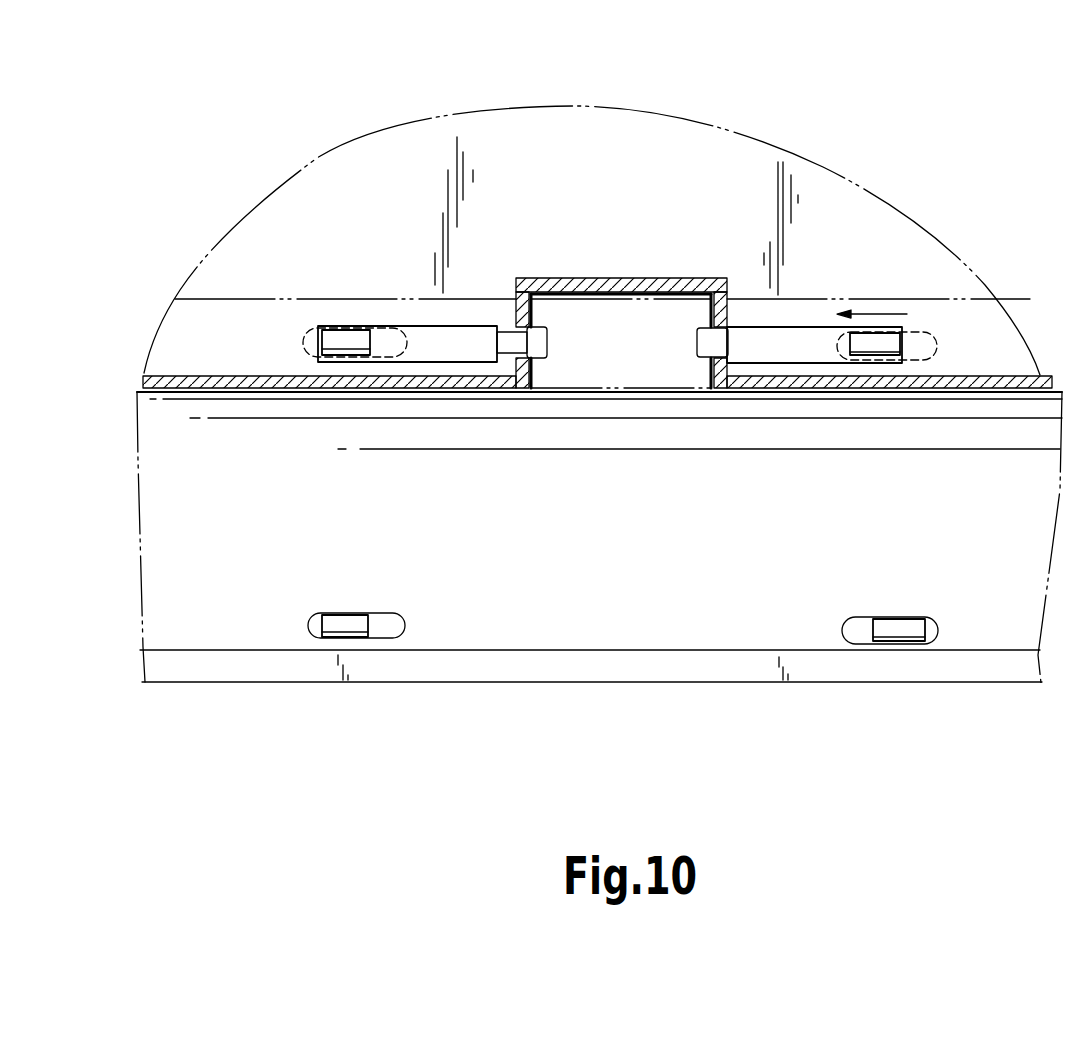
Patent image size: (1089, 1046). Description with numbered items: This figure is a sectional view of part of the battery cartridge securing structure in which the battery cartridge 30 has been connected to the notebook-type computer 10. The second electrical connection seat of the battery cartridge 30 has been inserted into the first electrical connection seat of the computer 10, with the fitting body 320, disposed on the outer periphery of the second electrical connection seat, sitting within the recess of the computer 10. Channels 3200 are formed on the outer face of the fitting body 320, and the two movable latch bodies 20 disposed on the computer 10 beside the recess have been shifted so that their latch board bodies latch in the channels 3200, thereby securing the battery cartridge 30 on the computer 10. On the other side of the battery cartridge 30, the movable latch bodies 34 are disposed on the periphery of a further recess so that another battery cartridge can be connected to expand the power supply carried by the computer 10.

The notebook-type computer 10 is at (742, 163).
The movable latch body 20 is at (343, 343).
The battery cartridge 30 is at (708, 605).
The fitting body 320 is at (626, 366).
The channel 3200 is at (550, 343).
The movable latch body 34 is at (348, 623).